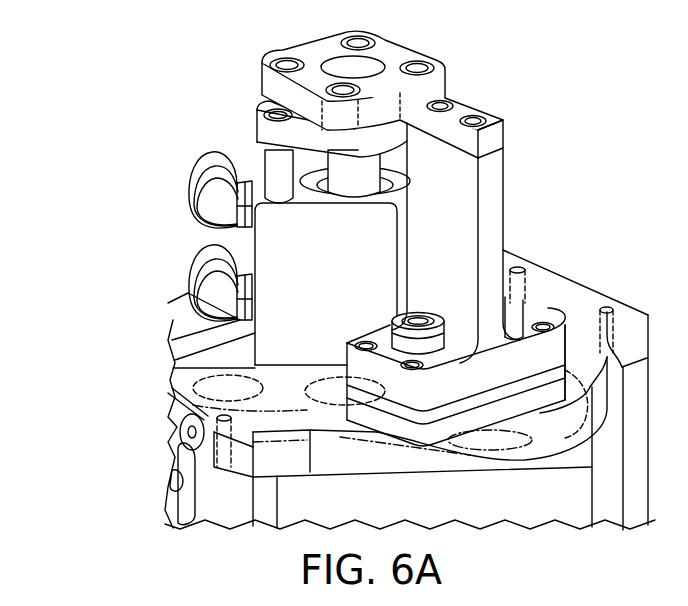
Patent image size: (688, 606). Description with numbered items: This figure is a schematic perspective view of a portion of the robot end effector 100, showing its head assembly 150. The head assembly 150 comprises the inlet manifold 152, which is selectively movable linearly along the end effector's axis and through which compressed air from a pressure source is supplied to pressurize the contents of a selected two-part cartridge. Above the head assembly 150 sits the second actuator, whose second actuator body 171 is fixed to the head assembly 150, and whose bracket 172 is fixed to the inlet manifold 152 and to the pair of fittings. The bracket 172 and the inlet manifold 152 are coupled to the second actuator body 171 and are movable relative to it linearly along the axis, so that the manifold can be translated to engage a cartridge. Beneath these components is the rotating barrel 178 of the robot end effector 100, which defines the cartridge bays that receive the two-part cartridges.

The robot end effector 100 is at (158, 88).
The head assembly 150 is at (570, 316).
The inlet manifold 152 is at (533, 313).
The second actuator body 171 is at (341, 292).
The bracket 172 is at (463, 112).
The rotating barrel 178 is at (527, 500).